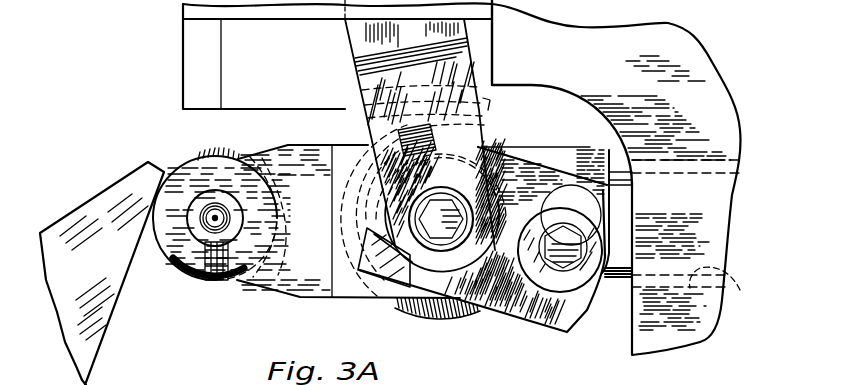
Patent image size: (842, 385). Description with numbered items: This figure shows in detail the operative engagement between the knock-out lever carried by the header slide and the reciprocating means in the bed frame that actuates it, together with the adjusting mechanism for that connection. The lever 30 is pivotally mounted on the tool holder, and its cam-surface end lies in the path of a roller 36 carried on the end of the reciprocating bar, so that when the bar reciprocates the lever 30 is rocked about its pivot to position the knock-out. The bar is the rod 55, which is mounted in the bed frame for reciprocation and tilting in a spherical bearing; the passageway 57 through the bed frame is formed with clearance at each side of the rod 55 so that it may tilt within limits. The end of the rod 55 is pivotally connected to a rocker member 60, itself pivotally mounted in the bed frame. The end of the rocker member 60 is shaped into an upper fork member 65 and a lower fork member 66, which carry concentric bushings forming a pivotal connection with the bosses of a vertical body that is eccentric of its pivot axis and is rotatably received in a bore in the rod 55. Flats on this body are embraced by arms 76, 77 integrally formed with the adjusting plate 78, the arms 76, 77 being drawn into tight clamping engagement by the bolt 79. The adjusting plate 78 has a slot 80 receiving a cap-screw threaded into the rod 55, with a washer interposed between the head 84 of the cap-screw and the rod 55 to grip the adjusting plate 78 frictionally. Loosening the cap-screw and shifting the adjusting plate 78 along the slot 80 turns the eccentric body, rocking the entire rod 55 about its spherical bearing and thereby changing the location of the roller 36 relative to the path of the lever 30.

The lever 30 is at (107, 290).
The roller 36 is at (212, 158).
The rod 55 is at (323, 269).
The passageway 57 is at (474, 177).
The rocker member 60 is at (368, 38).
The upper fork member 65 is at (480, 128).
The lower fork member 66 is at (500, 140).
The arm 76 is at (505, 185).
The arm 77 is at (412, 310).
The adjusting plate 78 is at (512, 314).
The bolt 79 is at (372, 282).
The slot 80 is at (602, 200).
The head 84 is at (580, 306).